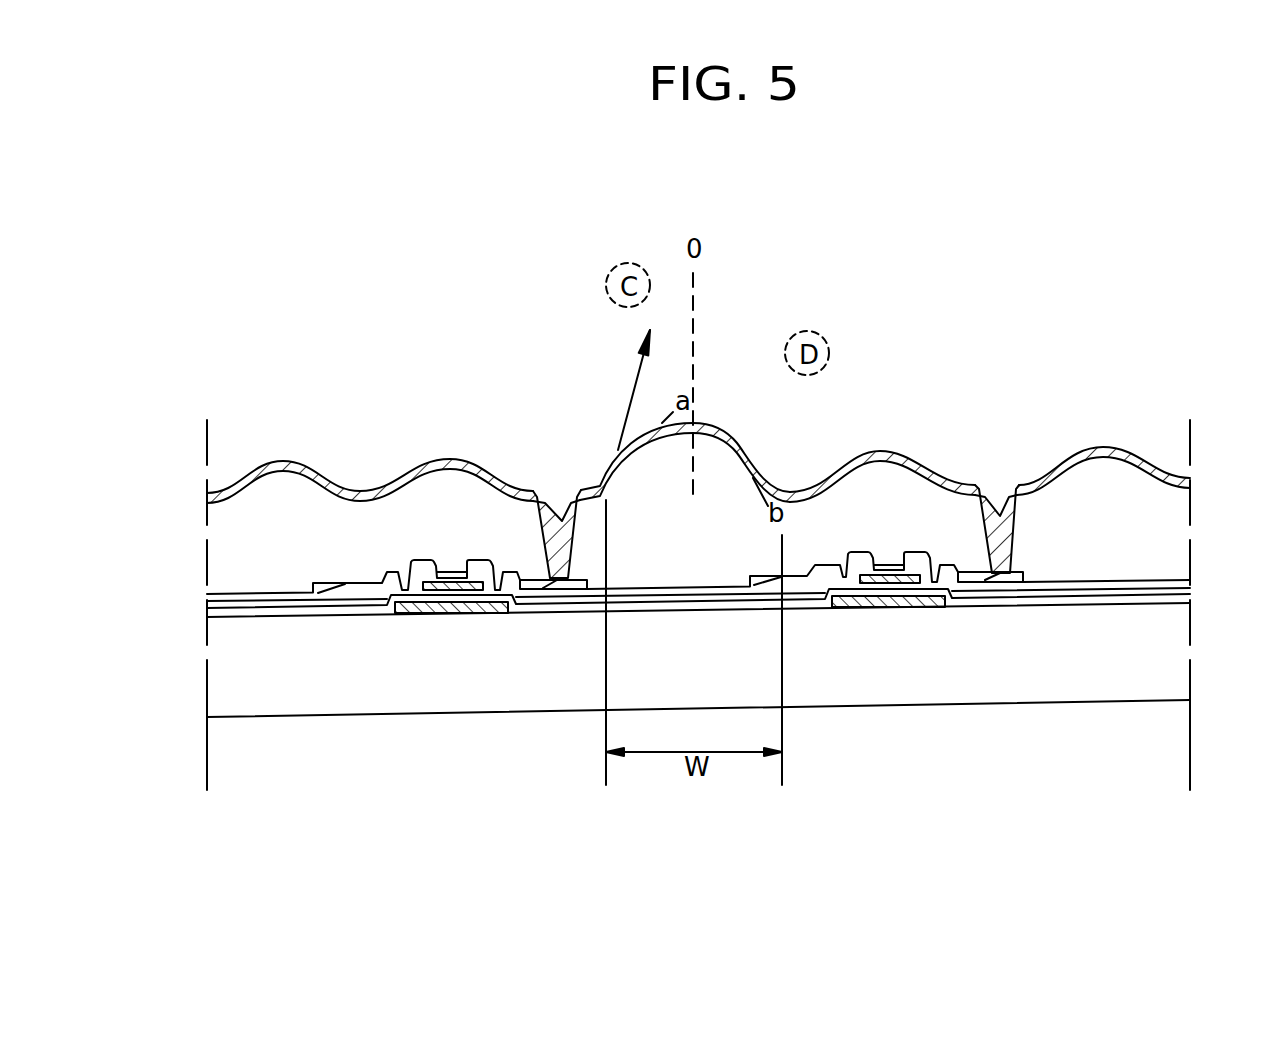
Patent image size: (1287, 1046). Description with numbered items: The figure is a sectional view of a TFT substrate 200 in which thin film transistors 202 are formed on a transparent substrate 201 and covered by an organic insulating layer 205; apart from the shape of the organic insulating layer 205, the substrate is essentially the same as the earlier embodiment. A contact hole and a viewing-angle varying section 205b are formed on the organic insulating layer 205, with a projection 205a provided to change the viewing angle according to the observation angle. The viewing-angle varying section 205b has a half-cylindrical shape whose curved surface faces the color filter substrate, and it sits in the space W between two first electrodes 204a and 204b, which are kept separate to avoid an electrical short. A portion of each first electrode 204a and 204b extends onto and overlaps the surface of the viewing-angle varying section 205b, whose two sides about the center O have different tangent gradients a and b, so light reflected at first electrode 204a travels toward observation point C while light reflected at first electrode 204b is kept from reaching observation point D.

The TFT substrate 200 is at (1118, 325).
The transparent substrate 201 is at (1190, 661).
The thin film transistor 202 is at (448, 632).
The first electrode 204a is at (284, 461).
The first electrode 204b is at (921, 452).
The organic insulating layer 205 is at (1190, 546).
The projection 205a is at (618, 448).
The viewing-angle varying section 205b is at (712, 426).